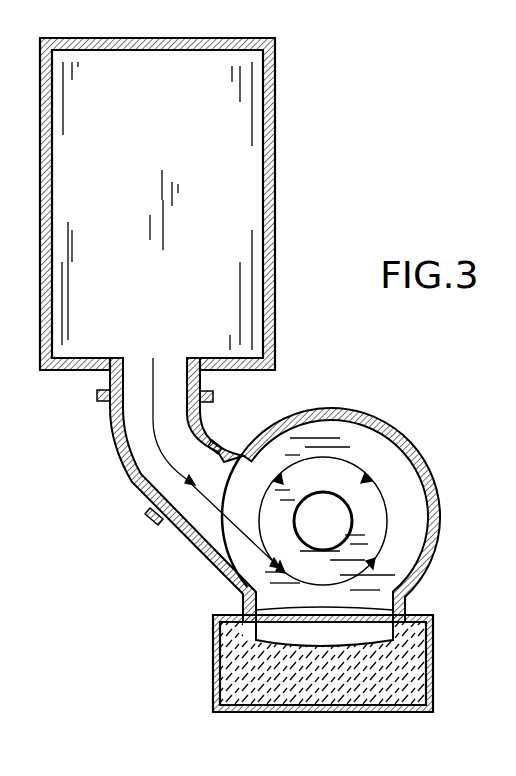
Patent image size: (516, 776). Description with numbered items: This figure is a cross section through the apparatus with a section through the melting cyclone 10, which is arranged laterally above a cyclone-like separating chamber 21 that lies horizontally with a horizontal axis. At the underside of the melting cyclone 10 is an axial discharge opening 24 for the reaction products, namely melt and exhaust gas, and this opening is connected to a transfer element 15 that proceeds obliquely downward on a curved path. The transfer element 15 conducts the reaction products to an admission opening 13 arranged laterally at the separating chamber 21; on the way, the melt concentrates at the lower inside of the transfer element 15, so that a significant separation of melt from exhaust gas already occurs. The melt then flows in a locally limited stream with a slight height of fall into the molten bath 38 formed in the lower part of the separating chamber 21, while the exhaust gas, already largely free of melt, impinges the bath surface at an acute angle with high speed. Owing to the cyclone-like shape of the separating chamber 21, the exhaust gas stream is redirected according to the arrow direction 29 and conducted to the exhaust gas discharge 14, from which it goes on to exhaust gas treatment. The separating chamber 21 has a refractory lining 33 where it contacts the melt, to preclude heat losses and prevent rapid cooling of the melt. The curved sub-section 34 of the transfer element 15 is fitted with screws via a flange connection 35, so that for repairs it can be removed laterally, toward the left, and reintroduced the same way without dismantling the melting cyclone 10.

The melting cyclone 10 is at (161, 133).
The admission opening 13 is at (192, 543).
The exhaust gas discharge 14 is at (337, 515).
The transfer element 15 is at (122, 457).
The separating chamber 21 is at (372, 409).
The axial discharge opening 24 is at (168, 357).
The arrow direction 29 is at (367, 478).
The refractory lining 33 is at (233, 654).
The curved sub-section 34 is at (210, 422).
The flange connection 35 is at (97, 398).
The molten bath 38 is at (398, 618).